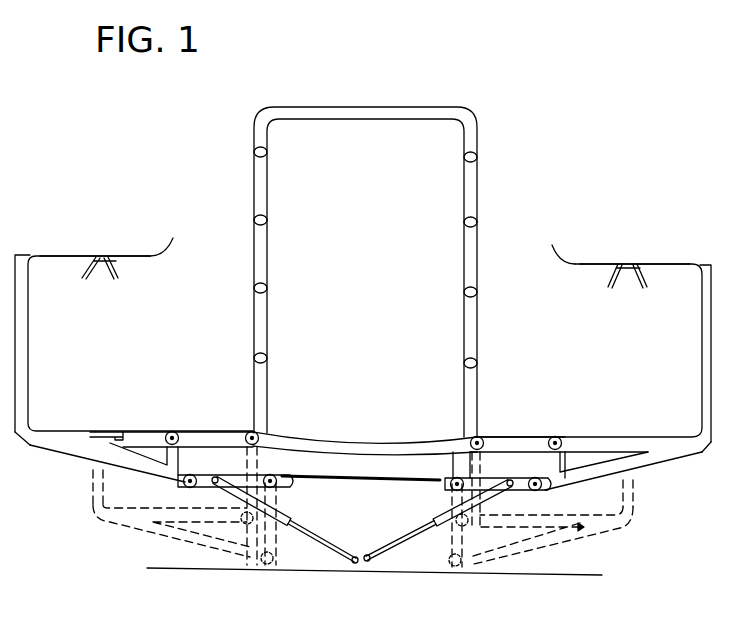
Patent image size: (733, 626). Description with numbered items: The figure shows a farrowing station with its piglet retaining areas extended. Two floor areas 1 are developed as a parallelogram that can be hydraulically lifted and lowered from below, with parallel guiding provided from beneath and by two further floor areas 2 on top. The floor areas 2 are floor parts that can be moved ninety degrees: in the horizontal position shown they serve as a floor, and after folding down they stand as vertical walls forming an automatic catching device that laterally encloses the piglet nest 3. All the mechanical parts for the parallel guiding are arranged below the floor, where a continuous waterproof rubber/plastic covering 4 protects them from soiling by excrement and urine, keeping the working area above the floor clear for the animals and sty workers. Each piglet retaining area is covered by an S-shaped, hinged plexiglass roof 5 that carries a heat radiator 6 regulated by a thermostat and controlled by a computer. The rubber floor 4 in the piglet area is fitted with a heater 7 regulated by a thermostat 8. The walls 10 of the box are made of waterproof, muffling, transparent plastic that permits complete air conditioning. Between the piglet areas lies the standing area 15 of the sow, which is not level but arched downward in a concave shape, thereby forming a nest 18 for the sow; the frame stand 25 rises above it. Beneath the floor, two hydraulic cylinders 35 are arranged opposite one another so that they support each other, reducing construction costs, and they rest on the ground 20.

The floor area 1 is at (140, 431).
The floor area 2 is at (215, 431).
The piglet nest 3 is at (148, 342).
The rubber/plastic covering 4 is at (30, 430).
The plexiglass roof 5 is at (60, 254).
The heat radiator 6 is at (105, 257).
The heater 7 is at (82, 440).
The thermostat 8 is at (110, 442).
The wall 10 is at (28, 345).
The standing area 15 is at (380, 347).
The nest 18 is at (355, 443).
The ground surface 20 is at (328, 575).
The frame stand 25 is at (465, 192).
The hydraulic cylinder 35 is at (395, 545).